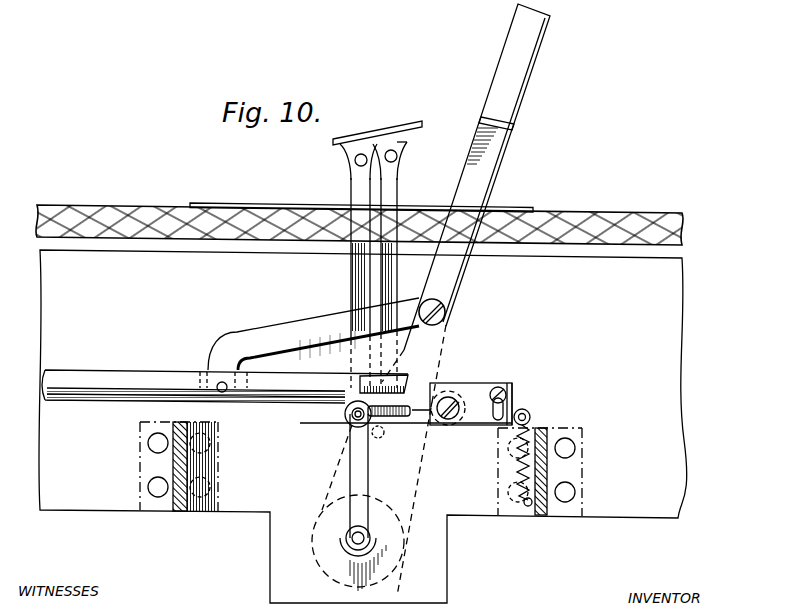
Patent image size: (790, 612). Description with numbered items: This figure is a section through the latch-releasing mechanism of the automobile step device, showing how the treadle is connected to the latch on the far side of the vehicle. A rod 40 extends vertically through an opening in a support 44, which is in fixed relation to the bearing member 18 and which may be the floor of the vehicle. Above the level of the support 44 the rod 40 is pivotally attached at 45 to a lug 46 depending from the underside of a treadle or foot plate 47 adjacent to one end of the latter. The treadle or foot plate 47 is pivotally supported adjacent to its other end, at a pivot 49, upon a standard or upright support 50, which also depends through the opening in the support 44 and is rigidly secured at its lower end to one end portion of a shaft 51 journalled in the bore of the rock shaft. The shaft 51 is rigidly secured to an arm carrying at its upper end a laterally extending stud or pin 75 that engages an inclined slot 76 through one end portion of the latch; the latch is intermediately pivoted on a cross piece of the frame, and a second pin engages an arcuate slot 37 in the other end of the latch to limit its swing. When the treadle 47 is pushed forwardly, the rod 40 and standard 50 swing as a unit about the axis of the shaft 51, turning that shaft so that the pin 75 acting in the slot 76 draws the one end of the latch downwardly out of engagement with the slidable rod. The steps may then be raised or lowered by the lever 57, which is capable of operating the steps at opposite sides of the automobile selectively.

The bearing member 18 is at (660, 383).
The arcuate slot 37 is at (530, 415).
The rod 40 is at (396, 187).
The support 44 is at (575, 230).
The pivotal attachment 45 is at (400, 159).
The lug 46 is at (399, 143).
The treadle or foot plate 47 is at (366, 138).
The pin hole 49 is at (355, 163).
The standard or upright support 50 is at (356, 187).
The shaft 51 is at (352, 539).
The lever 57 is at (446, 305).
The stud or pin 75 is at (353, 420).
The inclined slot 76 is at (400, 424).